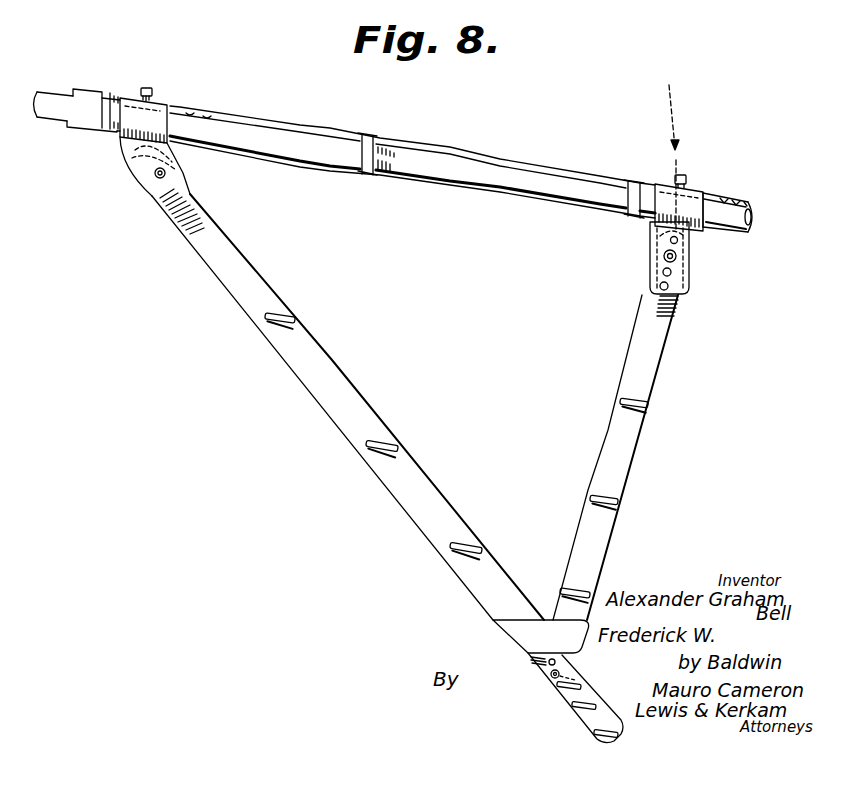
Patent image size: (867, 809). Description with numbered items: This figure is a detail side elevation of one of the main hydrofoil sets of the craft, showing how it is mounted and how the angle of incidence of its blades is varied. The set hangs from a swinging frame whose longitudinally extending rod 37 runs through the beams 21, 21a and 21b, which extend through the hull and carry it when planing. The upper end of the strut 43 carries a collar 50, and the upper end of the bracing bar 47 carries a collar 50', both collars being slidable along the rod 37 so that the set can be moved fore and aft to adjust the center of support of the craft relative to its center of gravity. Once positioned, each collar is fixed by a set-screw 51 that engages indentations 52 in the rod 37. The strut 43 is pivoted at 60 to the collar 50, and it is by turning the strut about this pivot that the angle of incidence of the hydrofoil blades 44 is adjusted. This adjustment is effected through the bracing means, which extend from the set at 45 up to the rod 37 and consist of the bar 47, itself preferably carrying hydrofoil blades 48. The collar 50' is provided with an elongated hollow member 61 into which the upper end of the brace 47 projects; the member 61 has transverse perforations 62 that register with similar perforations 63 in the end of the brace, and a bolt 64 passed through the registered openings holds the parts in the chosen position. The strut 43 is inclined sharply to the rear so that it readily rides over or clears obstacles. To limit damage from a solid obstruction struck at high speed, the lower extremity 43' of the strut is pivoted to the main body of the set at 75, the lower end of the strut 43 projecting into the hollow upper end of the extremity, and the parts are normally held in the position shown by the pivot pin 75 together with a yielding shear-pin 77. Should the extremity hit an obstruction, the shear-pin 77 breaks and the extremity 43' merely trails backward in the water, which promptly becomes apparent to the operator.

The beam 21 is at (102, 96).
The beam 21a is at (375, 140).
The beam 21b is at (636, 182).
The rod 37 is at (448, 165).
The collar 50 is at (166, 104).
The collar 50' is at (709, 158).
The set-screw 51 is at (153, 92).
The indentations 52 is at (193, 114).
The pivot 60 is at (158, 178).
The elongated hollow member 61 is at (690, 277).
The transverse perforations 62 is at (670, 240).
The perforations 63 is at (660, 286).
The bolt 64 is at (664, 257).
The strut 43 is at (348, 407).
The lower extremity of strut 43' is at (583, 698).
The hydrofoil blades 44 is at (298, 316).
The bracing attachment point 45 is at (528, 640).
The bar 47 is at (657, 372).
The hydrofoil blades 48 is at (648, 408).
The pivot pin 75 is at (552, 676).
The shear-pin 77 is at (558, 663).